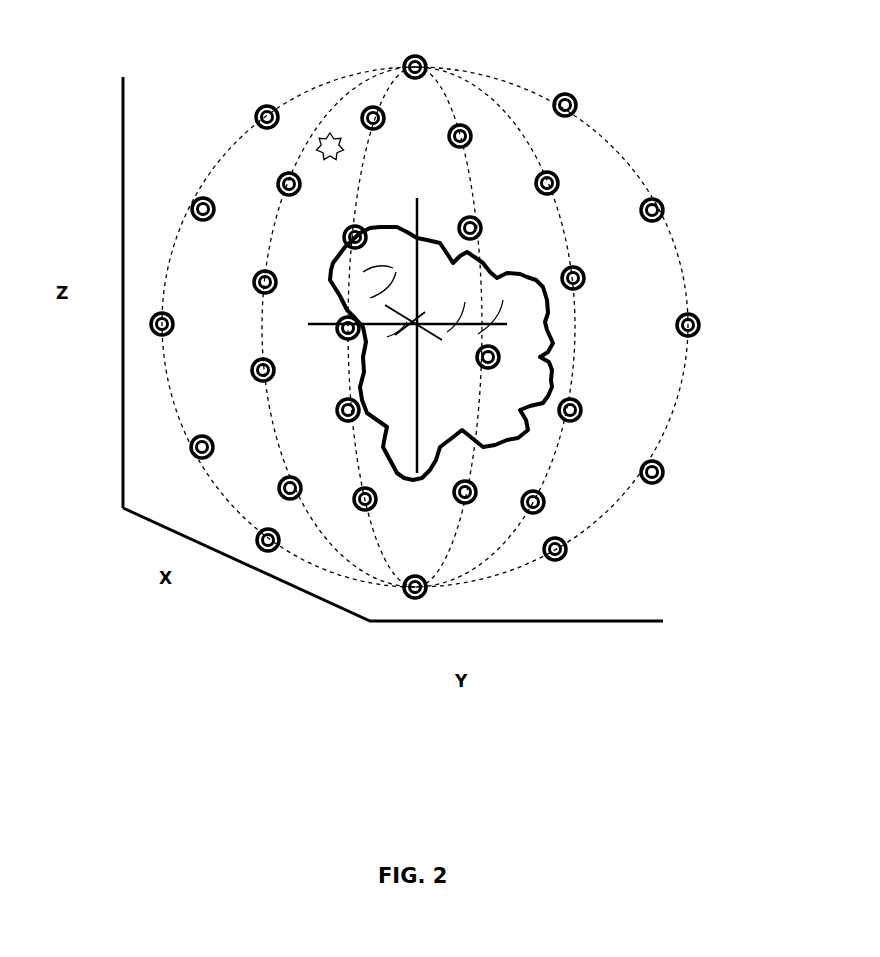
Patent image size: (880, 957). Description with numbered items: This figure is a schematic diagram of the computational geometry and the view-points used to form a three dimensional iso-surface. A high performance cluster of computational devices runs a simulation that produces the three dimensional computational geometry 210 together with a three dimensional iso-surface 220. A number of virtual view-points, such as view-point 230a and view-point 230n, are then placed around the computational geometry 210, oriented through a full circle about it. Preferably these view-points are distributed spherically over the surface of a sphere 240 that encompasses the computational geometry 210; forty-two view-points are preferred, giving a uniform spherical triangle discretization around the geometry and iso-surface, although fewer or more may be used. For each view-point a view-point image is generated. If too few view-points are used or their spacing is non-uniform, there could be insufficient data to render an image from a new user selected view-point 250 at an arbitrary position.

The computational geometry 210 is at (429, 238).
The iso-surface 220 is at (385, 276).
The view-point 230a is at (256, 104).
The view-point 230n is at (658, 197).
The sphere 240 is at (578, 378).
The user selected view-point 250 is at (329, 132).